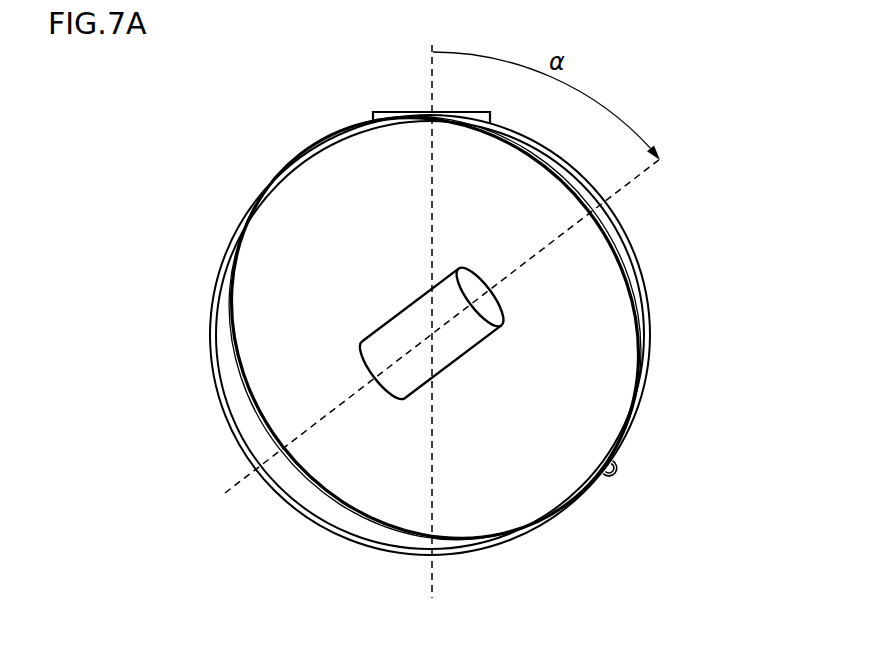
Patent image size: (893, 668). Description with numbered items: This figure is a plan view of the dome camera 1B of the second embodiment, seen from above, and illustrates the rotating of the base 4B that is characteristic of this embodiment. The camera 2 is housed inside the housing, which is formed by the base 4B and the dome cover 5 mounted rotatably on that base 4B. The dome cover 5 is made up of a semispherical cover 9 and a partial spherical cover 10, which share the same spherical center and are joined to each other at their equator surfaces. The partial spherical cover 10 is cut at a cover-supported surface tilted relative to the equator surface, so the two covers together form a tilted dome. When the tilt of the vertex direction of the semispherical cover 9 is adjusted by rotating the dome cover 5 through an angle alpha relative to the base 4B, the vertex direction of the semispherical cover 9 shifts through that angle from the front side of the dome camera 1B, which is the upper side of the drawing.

The dome camera 1B is at (214, 221).
The camera 2 is at (393, 315).
The base 4B is at (391, 111).
The dome cover 5 is at (670, 329).
The semispherical cover 9 is at (327, 495).
The partial spherical cover 10 is at (277, 490).